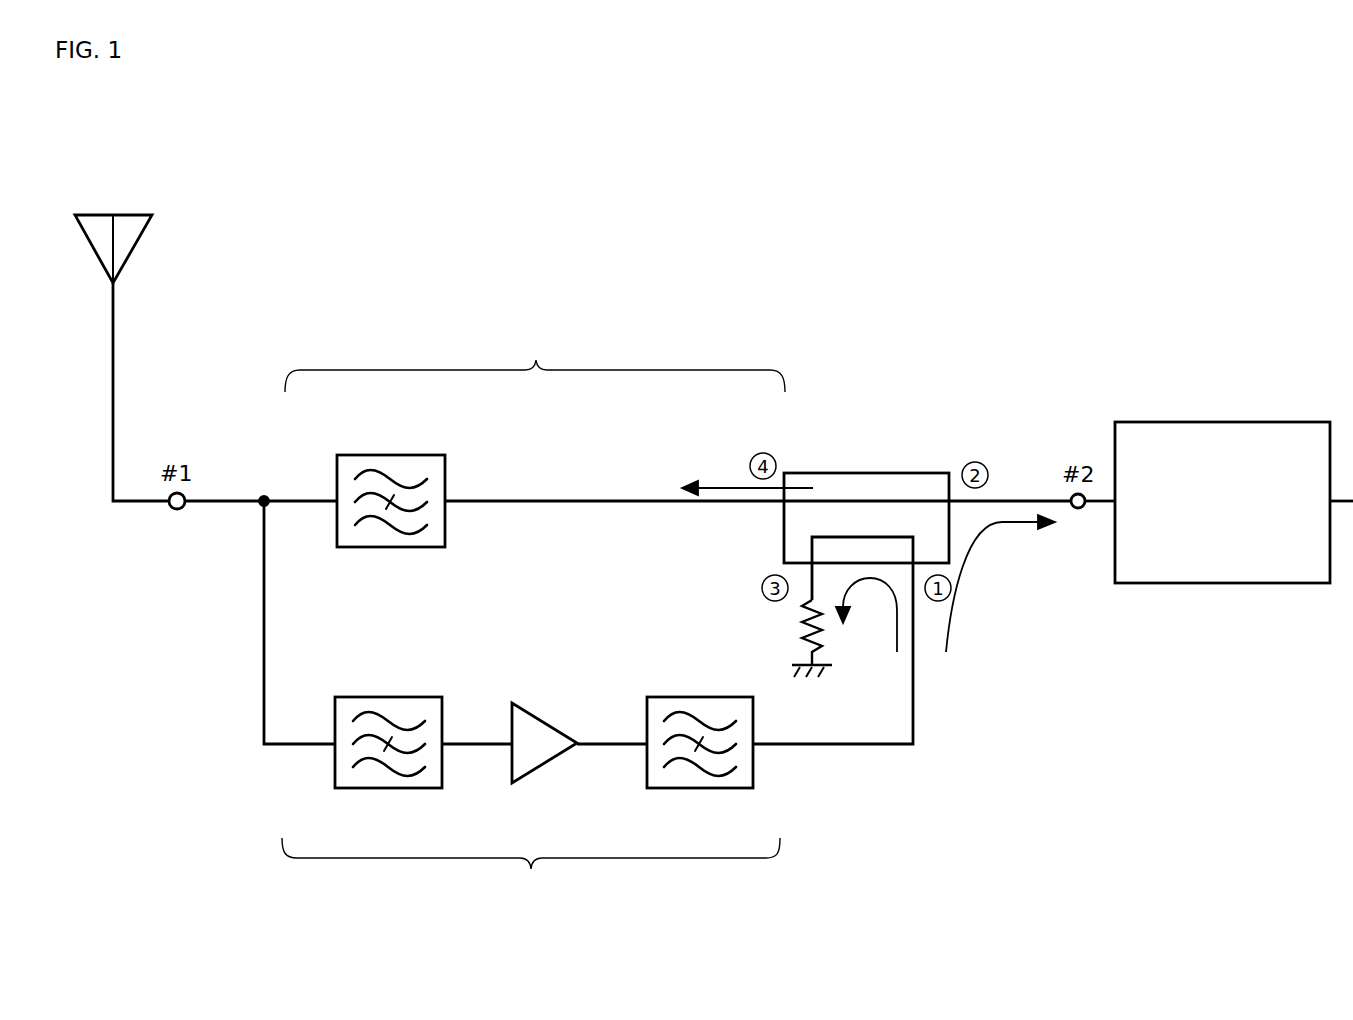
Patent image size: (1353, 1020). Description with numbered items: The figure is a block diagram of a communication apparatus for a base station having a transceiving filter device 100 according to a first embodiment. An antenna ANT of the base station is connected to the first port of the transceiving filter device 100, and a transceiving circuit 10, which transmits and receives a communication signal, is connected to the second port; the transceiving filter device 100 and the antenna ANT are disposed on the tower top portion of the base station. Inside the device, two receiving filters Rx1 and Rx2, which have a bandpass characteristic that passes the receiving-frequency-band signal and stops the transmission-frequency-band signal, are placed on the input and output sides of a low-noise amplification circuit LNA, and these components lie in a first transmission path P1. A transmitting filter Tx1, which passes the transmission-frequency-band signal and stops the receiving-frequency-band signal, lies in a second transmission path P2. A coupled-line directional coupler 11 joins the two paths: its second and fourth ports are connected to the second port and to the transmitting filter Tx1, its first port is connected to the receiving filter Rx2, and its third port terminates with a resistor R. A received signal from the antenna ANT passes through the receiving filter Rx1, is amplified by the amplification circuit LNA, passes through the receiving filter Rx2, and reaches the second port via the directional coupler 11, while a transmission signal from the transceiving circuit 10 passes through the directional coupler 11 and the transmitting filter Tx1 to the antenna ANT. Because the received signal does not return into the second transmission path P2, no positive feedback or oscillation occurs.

The transceiving filter device 100 is at (768, 269).
The transceiving circuit 10 is at (1240, 422).
The coupled-line directional coupler 11 is at (881, 473).
The antenna ANT is at (152, 215).
The transmitting filter Tx1 is at (391, 485).
The receiving filter Rx1 is at (388, 726).
The receiving filter Rx2 is at (700, 726).
The low-noise amplification circuit LNA is at (544, 724).
The resistor R is at (778, 638).
The first transmission path P1 is at (531, 876).
The second transmission path P2 is at (535, 357).